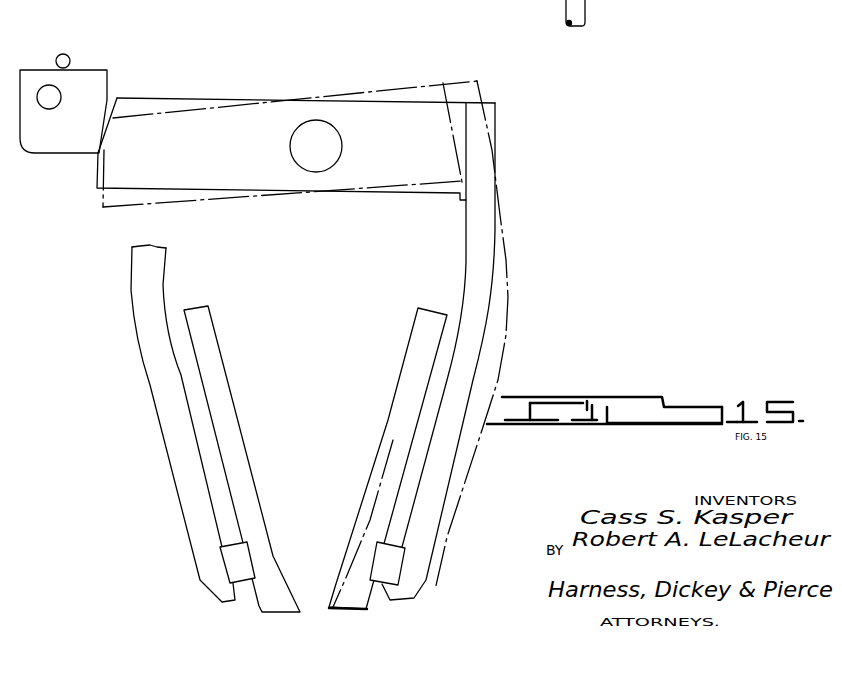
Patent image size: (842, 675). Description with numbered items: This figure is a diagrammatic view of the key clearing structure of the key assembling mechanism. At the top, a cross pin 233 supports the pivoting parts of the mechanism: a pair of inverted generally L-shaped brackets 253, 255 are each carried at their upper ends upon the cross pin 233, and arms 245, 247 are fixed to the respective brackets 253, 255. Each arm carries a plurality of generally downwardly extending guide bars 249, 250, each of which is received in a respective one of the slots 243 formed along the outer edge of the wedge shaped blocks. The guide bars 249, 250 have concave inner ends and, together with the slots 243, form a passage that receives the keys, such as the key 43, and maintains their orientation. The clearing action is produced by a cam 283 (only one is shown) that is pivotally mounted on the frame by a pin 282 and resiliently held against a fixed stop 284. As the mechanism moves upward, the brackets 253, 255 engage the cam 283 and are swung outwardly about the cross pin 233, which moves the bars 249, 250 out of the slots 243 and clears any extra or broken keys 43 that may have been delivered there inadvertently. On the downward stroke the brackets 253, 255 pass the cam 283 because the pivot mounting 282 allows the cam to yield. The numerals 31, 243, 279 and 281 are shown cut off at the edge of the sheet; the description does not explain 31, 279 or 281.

The pin 31 is at (585, 12).
The key 43 is at (661, 10).
The cross pin 233 is at (342, 142).
The slot 243 is at (454, 7).
The arm 245 is at (231, 557).
The arm 247 is at (396, 562).
The guide bar 249 is at (232, 387).
The guide bar 250 is at (400, 390).
The inverted L-shaped bracket 253 is at (131, 280).
The inverted L-shaped bracket 255 is at (496, 137).
The link 279 is at (517, 0).
The link 281 is at (538, 0).
The pin 282 is at (62, 90).
The cam 283 is at (109, 80).
The fixed stop 284 is at (68, 55).